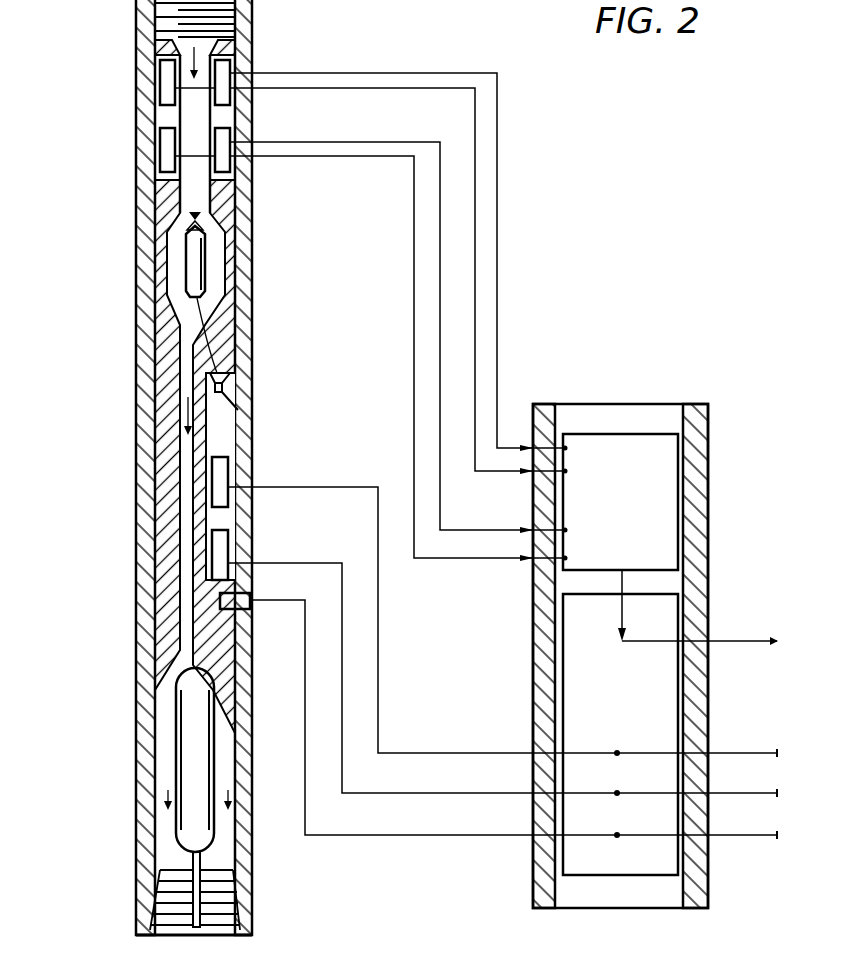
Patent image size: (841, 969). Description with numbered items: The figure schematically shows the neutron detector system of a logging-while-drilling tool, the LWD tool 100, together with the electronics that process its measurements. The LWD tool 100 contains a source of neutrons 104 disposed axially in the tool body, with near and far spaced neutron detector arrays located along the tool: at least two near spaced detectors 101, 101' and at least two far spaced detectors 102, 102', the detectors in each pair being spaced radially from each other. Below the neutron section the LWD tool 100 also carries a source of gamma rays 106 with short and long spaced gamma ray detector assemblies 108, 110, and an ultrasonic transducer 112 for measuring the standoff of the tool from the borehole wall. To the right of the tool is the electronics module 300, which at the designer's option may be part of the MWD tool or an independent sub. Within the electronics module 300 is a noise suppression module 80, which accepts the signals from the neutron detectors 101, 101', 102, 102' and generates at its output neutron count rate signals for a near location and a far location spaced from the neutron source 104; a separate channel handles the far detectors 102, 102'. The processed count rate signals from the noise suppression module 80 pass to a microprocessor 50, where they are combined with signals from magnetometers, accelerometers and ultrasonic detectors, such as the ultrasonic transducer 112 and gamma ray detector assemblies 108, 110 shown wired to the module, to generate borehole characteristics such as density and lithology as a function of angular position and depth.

The LWD tool 100 is at (110, 50).
The near spaced neutron detector 101 is at (391, 330).
The near spaced neutron detector 101' is at (313, 344).
The far spaced neutron detector 102 is at (391, 255).
The far spaced neutron detector 102' is at (313, 267).
The source of neutrons 104 is at (187, 265).
The source of gamma rays 106 is at (232, 374).
The short spaced gamma ray detector assembly 108 is at (216, 473).
The long spaced gamma ray detector assembly 110 is at (216, 545).
The ultrasonic transducer 112 is at (225, 603).
The electronics module 300 is at (703, 357).
The noise suppression module 80 is at (672, 452).
The microprocessor 50 is at (637, 862).